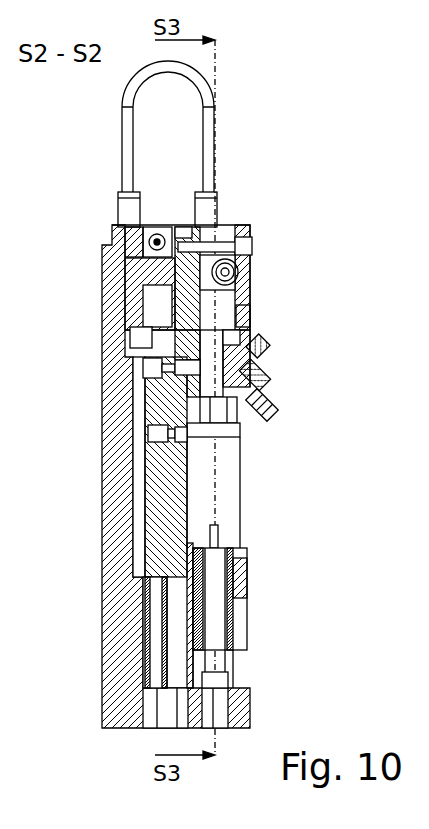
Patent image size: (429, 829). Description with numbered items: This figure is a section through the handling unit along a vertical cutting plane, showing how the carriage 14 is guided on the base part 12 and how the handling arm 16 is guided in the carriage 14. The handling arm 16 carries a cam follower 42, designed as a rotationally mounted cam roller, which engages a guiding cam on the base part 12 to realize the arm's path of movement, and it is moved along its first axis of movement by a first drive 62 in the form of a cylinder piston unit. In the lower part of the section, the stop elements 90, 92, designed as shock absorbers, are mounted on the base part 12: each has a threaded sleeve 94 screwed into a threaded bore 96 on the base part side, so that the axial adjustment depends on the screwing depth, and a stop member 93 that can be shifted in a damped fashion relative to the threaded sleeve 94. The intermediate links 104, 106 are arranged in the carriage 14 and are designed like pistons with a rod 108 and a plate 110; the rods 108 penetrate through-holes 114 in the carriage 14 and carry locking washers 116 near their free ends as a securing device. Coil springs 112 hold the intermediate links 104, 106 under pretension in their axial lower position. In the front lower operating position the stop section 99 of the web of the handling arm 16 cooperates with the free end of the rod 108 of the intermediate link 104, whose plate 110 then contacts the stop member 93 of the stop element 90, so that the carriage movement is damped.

The base part 12 is at (125, 675).
The carriage 14 is at (177, 530).
The handling arm 16 is at (215, 248).
The cam follower 42 is at (157, 297).
The first drive 62 is at (238, 272).
The stop element 90 is at (267, 615).
The stop element 92 is at (242, 558).
The stop member 93 is at (232, 541).
The threaded sleeve 94 is at (165, 620).
The threaded bore 96 is at (247, 590).
The stop section 99 is at (250, 318).
The intermediate link 104 is at (294, 427).
The intermediate link 106 is at (232, 410).
The rod 108 is at (232, 335).
The plate 110 is at (220, 434).
The coil spring 112 is at (250, 395).
The through-hole 114 is at (252, 369).
The locking washer 116 is at (258, 340).